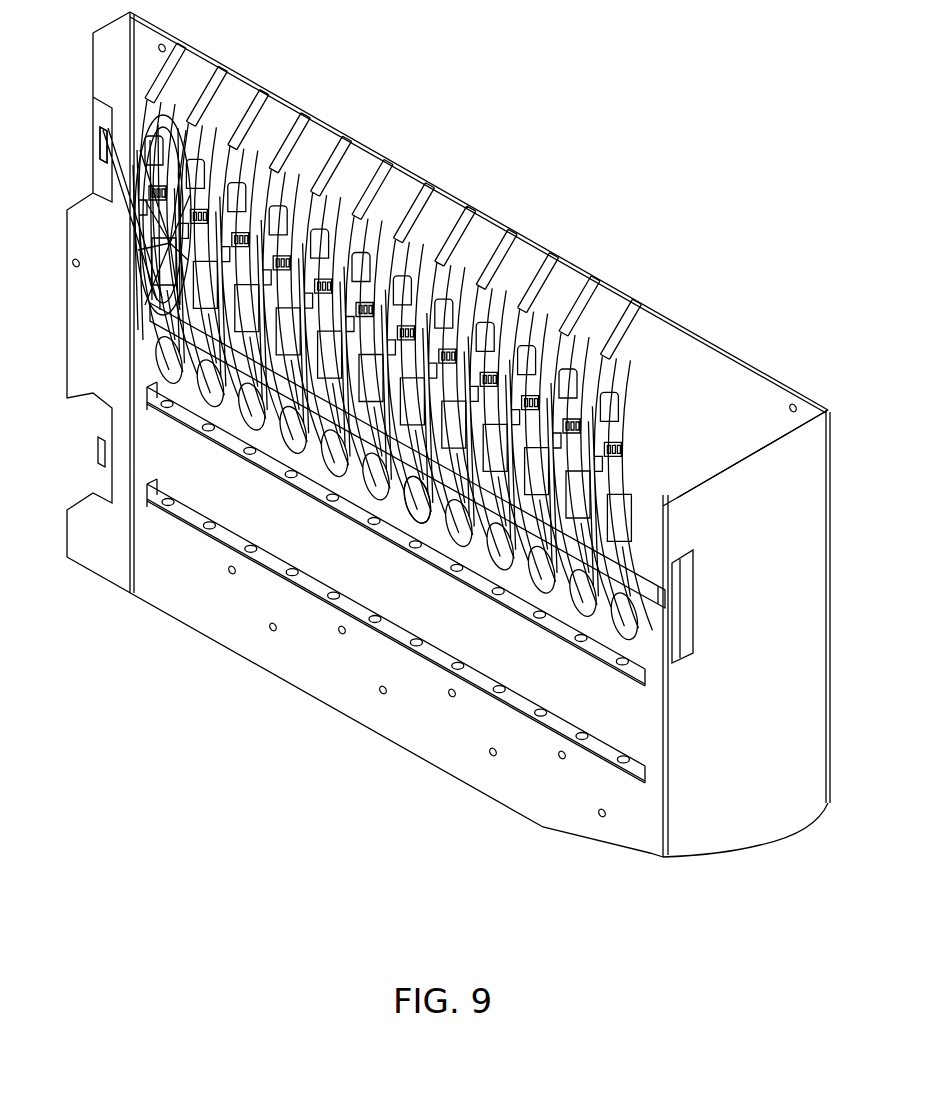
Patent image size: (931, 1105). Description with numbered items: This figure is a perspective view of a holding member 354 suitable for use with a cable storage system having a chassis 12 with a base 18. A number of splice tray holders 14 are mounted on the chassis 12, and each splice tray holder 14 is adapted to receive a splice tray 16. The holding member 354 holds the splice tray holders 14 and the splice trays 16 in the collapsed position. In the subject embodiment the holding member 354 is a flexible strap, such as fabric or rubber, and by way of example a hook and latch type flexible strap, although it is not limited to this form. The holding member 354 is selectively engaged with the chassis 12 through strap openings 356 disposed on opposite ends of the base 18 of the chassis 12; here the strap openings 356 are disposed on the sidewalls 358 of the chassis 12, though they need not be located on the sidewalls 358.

The chassis 12 is at (695, 330).
The splice tray holder 14 is at (646, 330).
The splice tray 16 is at (683, 447).
The base 18 is at (352, 666).
The holding member 354 is at (430, 468).
The strap opening 356 is at (97, 157).
The sidewall 358 is at (118, 308).